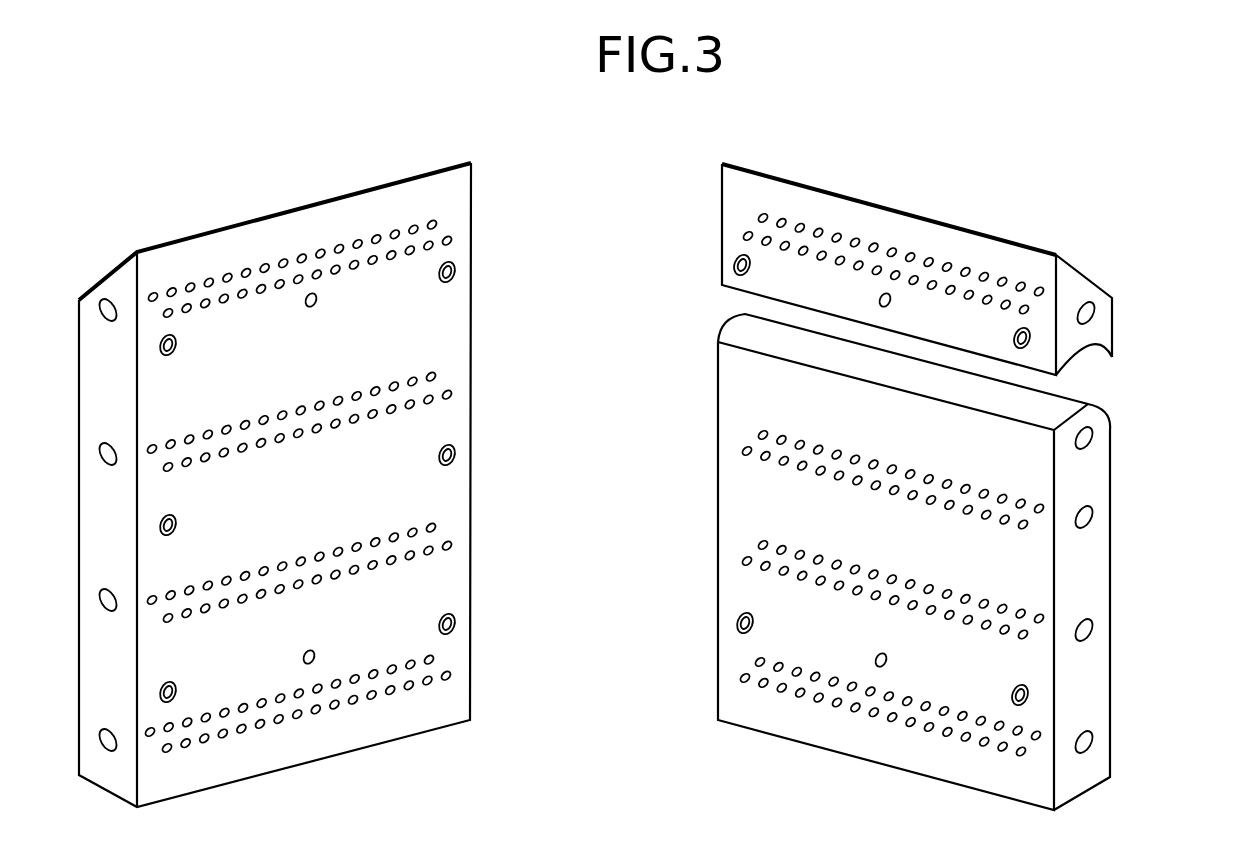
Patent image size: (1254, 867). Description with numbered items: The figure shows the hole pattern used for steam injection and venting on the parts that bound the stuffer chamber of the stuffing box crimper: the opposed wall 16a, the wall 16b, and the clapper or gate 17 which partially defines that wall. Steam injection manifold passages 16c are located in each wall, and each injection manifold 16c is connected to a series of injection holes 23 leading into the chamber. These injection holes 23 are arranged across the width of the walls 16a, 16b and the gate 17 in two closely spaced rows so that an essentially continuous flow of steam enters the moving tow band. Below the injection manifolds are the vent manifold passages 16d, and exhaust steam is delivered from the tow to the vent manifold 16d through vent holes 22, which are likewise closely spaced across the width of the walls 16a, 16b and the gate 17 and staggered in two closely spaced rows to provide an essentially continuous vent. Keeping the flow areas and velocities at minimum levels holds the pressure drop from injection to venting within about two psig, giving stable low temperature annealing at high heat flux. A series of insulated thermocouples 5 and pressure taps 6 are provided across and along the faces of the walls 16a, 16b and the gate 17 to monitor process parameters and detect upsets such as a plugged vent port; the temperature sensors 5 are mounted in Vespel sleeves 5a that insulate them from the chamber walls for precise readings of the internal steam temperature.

The insulated thermocouple 5 is at (740, 626).
The Vespel sleeve 5a is at (742, 612).
The pressure tap 6 is at (882, 662).
The wall 16a is at (324, 378).
The wall 16b is at (848, 298).
The steam injection manifold passage 16c is at (1103, 523).
The vent manifold passage 16d is at (1169, 764).
The clapper 17 is at (894, 545).
The vent hole 22 is at (447, 551).
The injection hole 23 is at (242, 292).